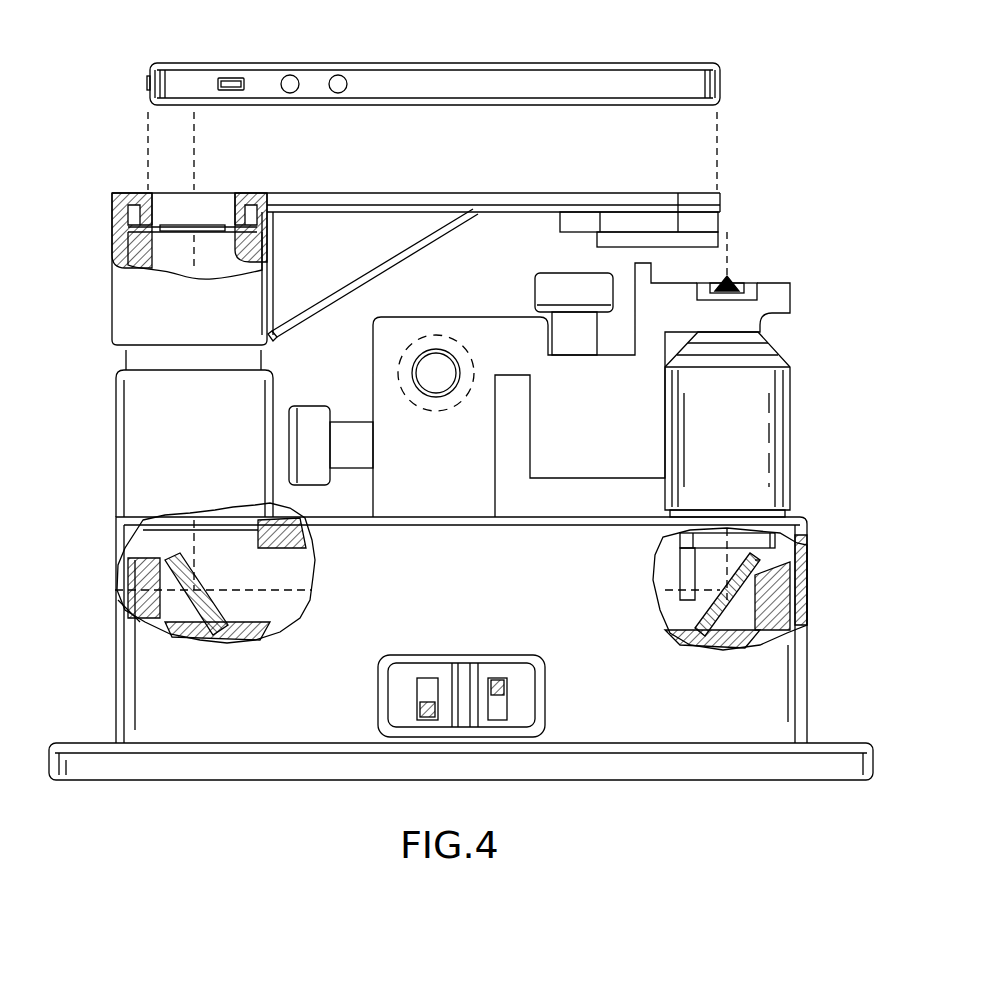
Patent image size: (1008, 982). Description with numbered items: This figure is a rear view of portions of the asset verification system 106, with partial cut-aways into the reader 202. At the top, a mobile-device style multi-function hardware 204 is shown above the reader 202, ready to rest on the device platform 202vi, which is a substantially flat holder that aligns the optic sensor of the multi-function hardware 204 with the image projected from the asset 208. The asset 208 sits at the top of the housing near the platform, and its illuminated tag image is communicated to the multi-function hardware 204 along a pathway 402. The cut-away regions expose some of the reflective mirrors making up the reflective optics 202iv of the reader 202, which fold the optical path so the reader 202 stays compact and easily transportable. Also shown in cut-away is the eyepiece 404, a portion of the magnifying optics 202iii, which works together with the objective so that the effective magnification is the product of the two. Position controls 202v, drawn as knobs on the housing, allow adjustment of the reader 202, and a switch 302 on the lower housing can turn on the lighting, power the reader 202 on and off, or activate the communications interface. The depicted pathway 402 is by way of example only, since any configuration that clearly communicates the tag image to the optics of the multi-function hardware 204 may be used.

The asset verification system 106 is at (800, 98).
The multi-function hardware 204 is at (652, 63).
The reader 202 is at (763, 683).
The magnifying optics 202iii is at (160, 253).
The reflective optics 202iv is at (150, 580).
The position controls 202v is at (330, 407).
The device platform 202vi is at (707, 193).
The asset 208 is at (736, 280).
The switch 302 is at (428, 707).
The pathway 402 is at (290, 582).
The eyepiece 404 is at (220, 213).